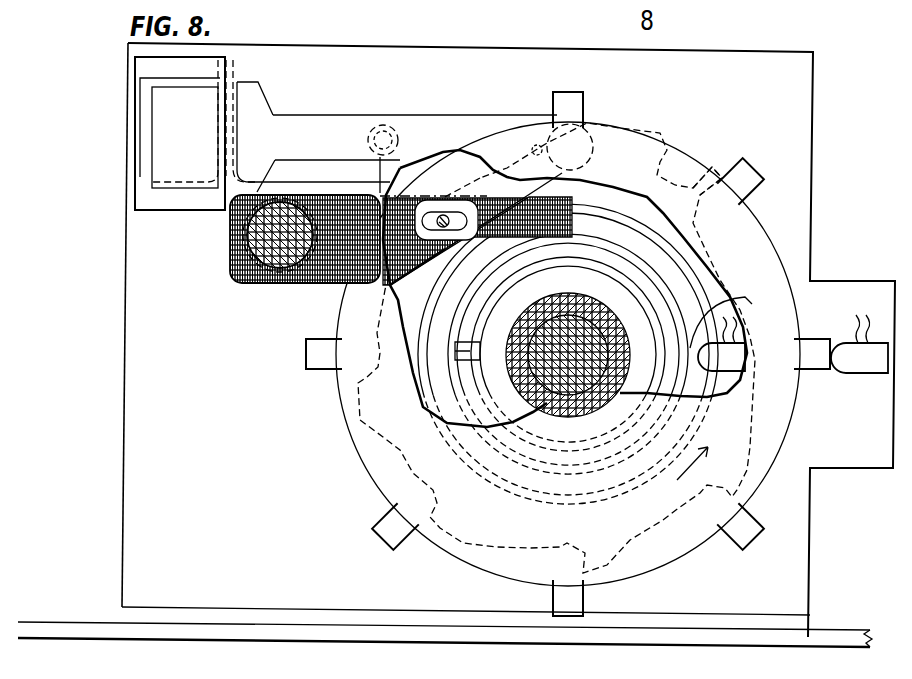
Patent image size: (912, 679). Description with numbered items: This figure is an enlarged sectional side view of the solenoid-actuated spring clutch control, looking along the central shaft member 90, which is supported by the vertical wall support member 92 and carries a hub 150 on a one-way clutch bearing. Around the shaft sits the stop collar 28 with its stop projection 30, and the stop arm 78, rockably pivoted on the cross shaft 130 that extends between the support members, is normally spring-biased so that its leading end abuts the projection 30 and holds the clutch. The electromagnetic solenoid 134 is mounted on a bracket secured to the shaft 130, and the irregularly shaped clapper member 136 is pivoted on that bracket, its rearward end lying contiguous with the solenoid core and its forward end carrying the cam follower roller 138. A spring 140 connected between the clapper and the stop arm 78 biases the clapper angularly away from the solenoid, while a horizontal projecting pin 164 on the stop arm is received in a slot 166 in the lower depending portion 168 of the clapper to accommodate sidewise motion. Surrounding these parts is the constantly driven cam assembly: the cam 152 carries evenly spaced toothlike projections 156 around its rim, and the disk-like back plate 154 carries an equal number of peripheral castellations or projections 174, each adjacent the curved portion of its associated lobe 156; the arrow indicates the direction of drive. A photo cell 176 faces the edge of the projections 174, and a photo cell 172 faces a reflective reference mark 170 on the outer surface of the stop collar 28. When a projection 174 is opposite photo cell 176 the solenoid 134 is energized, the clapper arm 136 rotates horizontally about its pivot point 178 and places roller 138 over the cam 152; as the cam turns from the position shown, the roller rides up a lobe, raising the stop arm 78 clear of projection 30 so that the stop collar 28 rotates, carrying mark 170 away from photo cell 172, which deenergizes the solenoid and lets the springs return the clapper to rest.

The stop collar 28 is at (462, 380).
The stop projection 30 is at (580, 233).
The stop arm 78 is at (327, 278).
The central shaft member 90 is at (560, 388).
The vertical wall support member 92 is at (203, 588).
The cross shaft 130 is at (260, 240).
The electromagnetic solenoid 134 is at (145, 117).
The clapper member 136 is at (316, 152).
The cam follower roller 138 is at (582, 140).
The spring 140 is at (362, 123).
The hub 150 is at (430, 405).
The cam 152 is at (658, 162).
The back plate 154 is at (762, 238).
The toothlike projection 156 is at (708, 176).
The horizontal projecting pin 164 is at (443, 214).
The slot 166 is at (461, 218).
The lower depending portion 168 is at (471, 241).
The reference mark 170 is at (730, 322).
The photo cell 172 is at (738, 354).
The peripheral projection 174 is at (755, 184).
The photo cell 176 is at (855, 373).
The pivot point 178 is at (242, 82).